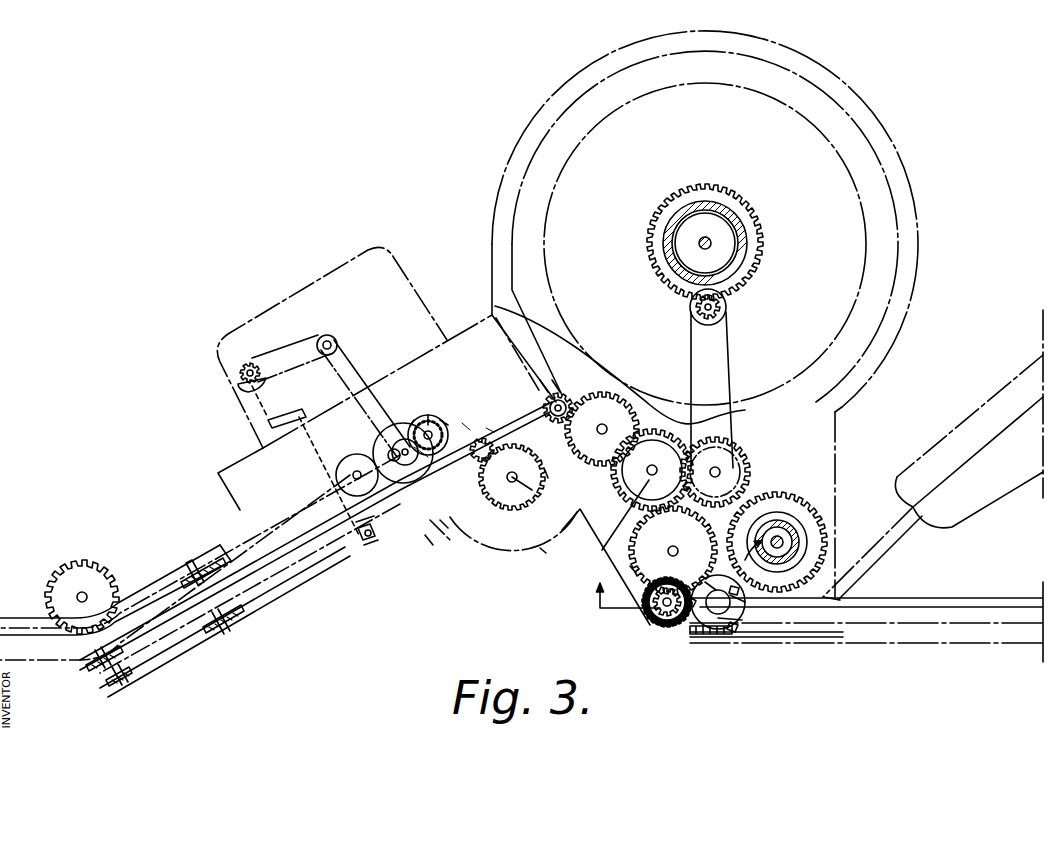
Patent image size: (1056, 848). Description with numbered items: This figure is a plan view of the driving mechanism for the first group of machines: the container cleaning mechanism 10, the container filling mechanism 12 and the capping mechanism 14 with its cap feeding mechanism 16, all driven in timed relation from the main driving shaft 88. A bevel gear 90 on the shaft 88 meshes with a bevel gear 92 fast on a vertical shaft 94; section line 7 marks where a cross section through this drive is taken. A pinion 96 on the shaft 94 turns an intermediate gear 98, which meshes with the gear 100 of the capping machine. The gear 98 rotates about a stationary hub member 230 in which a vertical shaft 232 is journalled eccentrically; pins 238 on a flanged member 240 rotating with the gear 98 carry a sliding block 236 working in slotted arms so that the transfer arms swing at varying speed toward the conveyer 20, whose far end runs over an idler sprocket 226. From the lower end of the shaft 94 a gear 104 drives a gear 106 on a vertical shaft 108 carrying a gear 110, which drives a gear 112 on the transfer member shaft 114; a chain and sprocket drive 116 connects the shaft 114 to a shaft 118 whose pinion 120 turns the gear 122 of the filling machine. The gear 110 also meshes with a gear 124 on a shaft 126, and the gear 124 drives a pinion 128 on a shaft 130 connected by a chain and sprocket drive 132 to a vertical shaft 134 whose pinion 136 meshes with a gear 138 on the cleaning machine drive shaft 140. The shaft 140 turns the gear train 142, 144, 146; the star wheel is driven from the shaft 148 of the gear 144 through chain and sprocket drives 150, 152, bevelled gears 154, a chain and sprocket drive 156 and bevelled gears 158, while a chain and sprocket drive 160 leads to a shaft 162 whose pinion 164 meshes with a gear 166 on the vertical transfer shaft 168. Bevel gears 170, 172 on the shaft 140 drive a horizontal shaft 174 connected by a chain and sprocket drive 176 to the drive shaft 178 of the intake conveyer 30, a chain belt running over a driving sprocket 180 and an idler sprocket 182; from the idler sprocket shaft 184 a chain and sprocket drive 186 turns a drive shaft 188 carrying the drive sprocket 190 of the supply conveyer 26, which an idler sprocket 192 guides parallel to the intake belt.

The section line 7 is at (627, 609).
The container cleaning mechanism 10 is at (253, 303).
The container filling mechanism 12 is at (508, 146).
The container closing or capping mechanism 14 is at (825, 495).
The cap feeding mechanism 16 is at (975, 412).
The continuously moving conveyer 20 is at (943, 652).
The supply conveyer 26 is at (32, 618).
The intake conveyer 30 is at (262, 581).
The main driving shaft 88 is at (926, 597).
The bevel gear 90 is at (701, 633).
The bevel gear 92 is at (688, 629).
The vertical shaft 94 is at (648, 615).
The pinion 96 is at (665, 628).
The intermediate gear 98 is at (747, 613).
The gear 100 is at (826, 536).
The gear 104 is at (630, 569).
The gear 106 is at (725, 412).
The vertical shaft 108 is at (542, 552).
The gear 110 is at (645, 431).
The gear 112 is at (748, 479).
The vertical shaft 114 is at (720, 473).
The chain and sprocket drive 116 is at (731, 377).
The shaft 118 is at (695, 309).
The pinion 120 is at (727, 312).
The gear 122 is at (759, 264).
The gear 124 is at (618, 404).
The shaft 126 is at (604, 425).
The pinion 128 is at (568, 390).
The shaft 130 is at (568, 395).
The chain and sprocket drive 132 is at (468, 428).
The vertical shaft 134 is at (436, 543).
The pinion 136 is at (393, 438).
The gear 138 is at (415, 421).
The drive shaft 140 is at (428, 420).
The gear train gear 142 is at (440, 420).
The gear train gear 144 is at (388, 443).
The gear train gear 146 is at (335, 483).
The shaft 148 is at (390, 454).
The chain and sprocket drive 150 is at (348, 361).
The chain and sprocket drive 152 is at (300, 357).
The bevelled gears 154 is at (236, 380).
The chain and sprocket drive 156 is at (266, 429).
The bevelled gears 158 is at (364, 544).
The chain and sprocket drive 160 is at (476, 428).
The shaft 162 is at (533, 475).
The pinion 164 is at (484, 440).
The gear 166 is at (515, 509).
The vertical shaft 168 is at (532, 491).
The bevel gear 170 is at (428, 541).
The bevel gear 172 is at (432, 525).
The horizontal shaft 174 is at (478, 463).
The chain and sprocket drive 176 is at (547, 472).
The drive shaft 178 is at (545, 390).
The driving sprocket 180 is at (557, 390).
The idler sprocket 182 is at (86, 668).
The idler sprocket shaft 184 is at (106, 688).
The chain and sprocket drive 186 is at (168, 656).
The drive shaft 188 is at (232, 620).
The drive sprocket 190 is at (213, 553).
The idler sprocket 192 is at (93, 563).
The idler sprocket 226 is at (715, 641).
The stationary hub member 230 is at (712, 587).
The vertical shaft 232 is at (723, 581).
The sliding block 236 is at (745, 591).
The pin 238 is at (728, 635).
The flanged member 240 is at (743, 626).